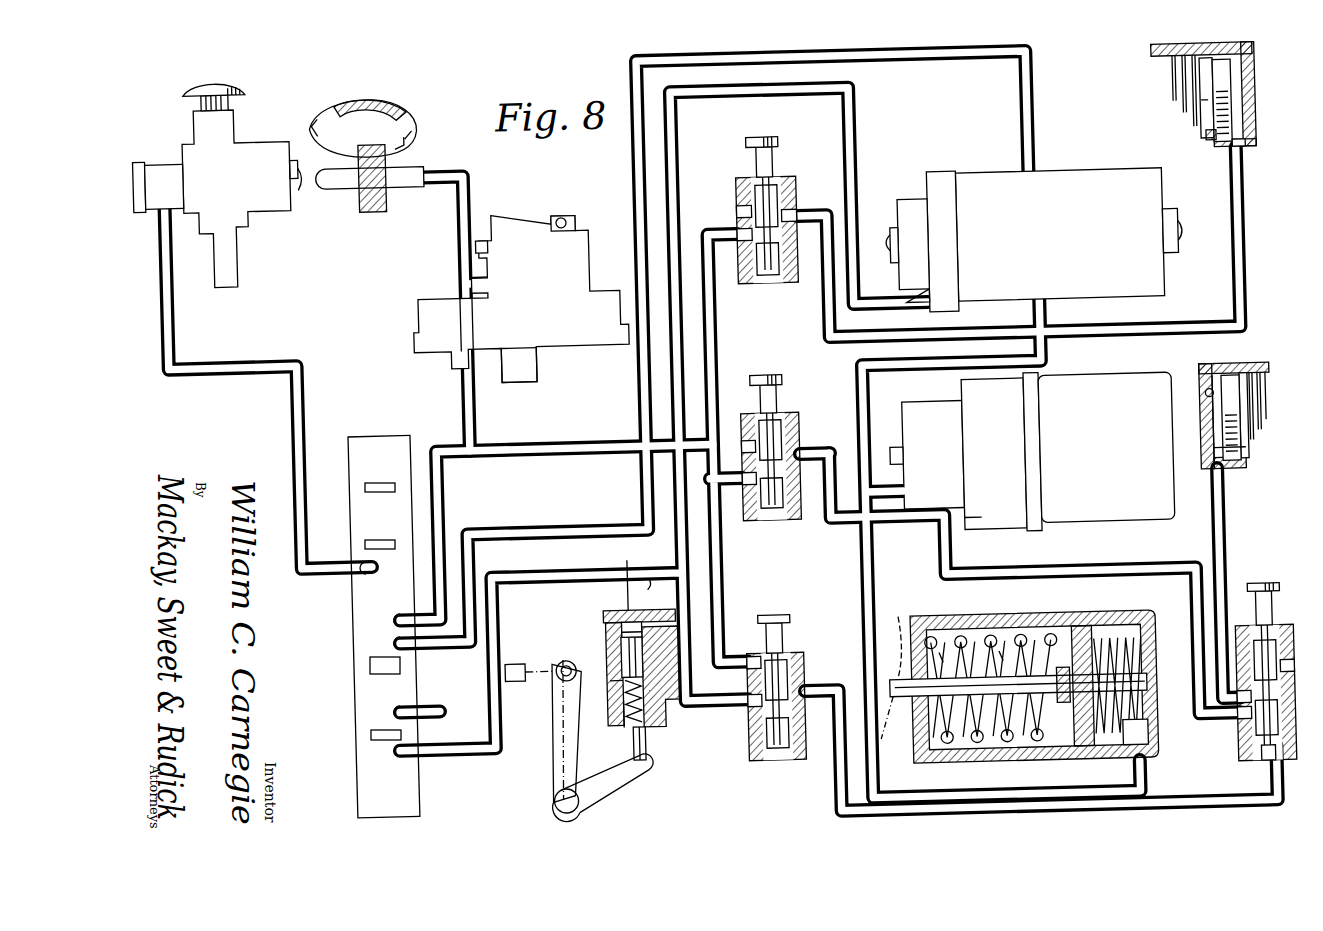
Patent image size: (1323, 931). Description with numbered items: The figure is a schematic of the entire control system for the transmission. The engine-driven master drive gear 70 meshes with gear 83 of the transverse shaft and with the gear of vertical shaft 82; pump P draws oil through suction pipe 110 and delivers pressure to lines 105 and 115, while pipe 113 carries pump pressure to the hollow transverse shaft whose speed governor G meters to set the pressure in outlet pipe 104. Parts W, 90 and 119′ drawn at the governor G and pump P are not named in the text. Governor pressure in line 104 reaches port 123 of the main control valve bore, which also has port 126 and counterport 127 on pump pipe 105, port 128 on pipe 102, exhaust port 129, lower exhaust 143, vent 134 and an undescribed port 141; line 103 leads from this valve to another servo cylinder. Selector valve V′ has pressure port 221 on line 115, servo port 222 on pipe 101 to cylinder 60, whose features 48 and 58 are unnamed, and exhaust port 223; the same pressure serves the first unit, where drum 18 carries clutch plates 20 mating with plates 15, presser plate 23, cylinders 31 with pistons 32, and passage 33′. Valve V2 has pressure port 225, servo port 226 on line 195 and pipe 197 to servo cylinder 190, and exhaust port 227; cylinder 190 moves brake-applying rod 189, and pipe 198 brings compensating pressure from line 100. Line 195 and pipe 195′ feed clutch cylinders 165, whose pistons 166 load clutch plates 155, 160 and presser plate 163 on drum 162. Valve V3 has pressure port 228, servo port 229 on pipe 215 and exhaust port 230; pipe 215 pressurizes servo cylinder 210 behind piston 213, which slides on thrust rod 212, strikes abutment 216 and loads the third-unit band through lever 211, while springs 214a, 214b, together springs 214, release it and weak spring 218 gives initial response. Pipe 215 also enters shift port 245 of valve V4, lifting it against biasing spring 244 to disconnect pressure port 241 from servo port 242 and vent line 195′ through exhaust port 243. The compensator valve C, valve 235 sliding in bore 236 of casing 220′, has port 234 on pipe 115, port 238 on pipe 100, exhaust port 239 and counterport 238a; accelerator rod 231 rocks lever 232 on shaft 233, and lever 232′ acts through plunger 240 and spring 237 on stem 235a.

The handwheel W is at (247, 91).
The valve stem 90 is at (236, 127).
The gauge valve G is at (238, 207).
The cam 70 is at (398, 122).
The gear 83 is at (378, 198).
The pipe 113 is at (420, 172).
The fitting 119′ is at (482, 238).
The boss 82 is at (567, 216).
The pipe 115 is at (472, 268).
The pump P is at (557, 340).
The pump base 110 is at (518, 378).
The pipe 105 is at (470, 418).
The pipe 104 is at (163, 296).
The pipe 102 is at (588, 528).
The connection 220′ is at (630, 600).
The port 134 is at (365, 485).
The port 141 is at (365, 543).
The port 123 is at (368, 575).
The port 126 is at (397, 620).
The port 128 is at (397, 643).
The port 129 is at (370, 665).
The port 127 is at (397, 712).
The port 143 is at (370, 735).
The pipe 103 is at (445, 752).
The pin 231 is at (510, 662).
The casing 235 is at (612, 612).
The bore 238 is at (612, 622).
The plunger 236 is at (622, 645).
The chamber 239 is at (615, 668).
The passage 238a is at (610, 680).
The spring 237 is at (630, 720).
The casing extension 235a is at (632, 750).
The rod 240 is at (647, 752).
The lever 232 is at (554, 758).
The roller 233 is at (575, 803).
The lever arm 232′ is at (636, 780).
The cap 234 is at (660, 612).
The control valve C is at (645, 608).
The pipe 100 is at (1047, 312).
The port 230 is at (747, 655).
The port 228 is at (758, 708).
The valve V3 is at (782, 612).
The pipe 229 is at (805, 690).
The valve V′ is at (782, 140).
The groove 223 is at (737, 207).
The port 222 is at (795, 212).
The port 221 is at (740, 233).
The pipe 101 is at (828, 218).
The fitting 48 is at (888, 235).
The cylinder 60 is at (982, 175).
The fitting 58 is at (1178, 222).
The valve housing 18 is at (1255, 52).
The stem 15 is at (1185, 80).
The stem 20 is at (1193, 108).
The valve member 31 is at (1238, 95).
The stem 23 is at (1200, 130).
The seat 32 is at (1218, 150).
The outlet 33′ is at (1243, 150).
The valve V2 is at (790, 378).
The port 227 is at (750, 440).
The port 226 is at (790, 453).
The port 225 is at (750, 482).
The fitting 189 is at (900, 450).
The housing 198 is at (900, 500).
The outlet 197 is at (960, 515).
The pipe 195 is at (942, 540).
The cylinder 190 is at (1085, 388).
The ring 165 is at (1207, 390).
The wall 162 is at (1212, 370).
The valve member 166 is at (1230, 372).
The valve 160 is at (1265, 376).
The stem 155 is at (1260, 415).
The outlet 163 is at (1245, 447).
The pipe 195′ is at (1222, 505).
The valve V4 is at (1260, 583).
The handle 244 is at (1275, 630).
The port 243 is at (1296, 668).
The port 242 is at (1237, 712).
The port 241 is at (1238, 718).
The outlet 245 is at (1258, 755).
The rod 212 is at (902, 675).
The spring section 214a is at (962, 635).
The cylinder 210 is at (980, 625).
The spring section 214b is at (1000, 640).
The collar 216 is at (1063, 668).
The piston 213 is at (1090, 635).
The spring 218 is at (1135, 640).
The rod end 211 is at (893, 705).
The spring 214 is at (995, 740).
The outlet 215 is at (1118, 795).